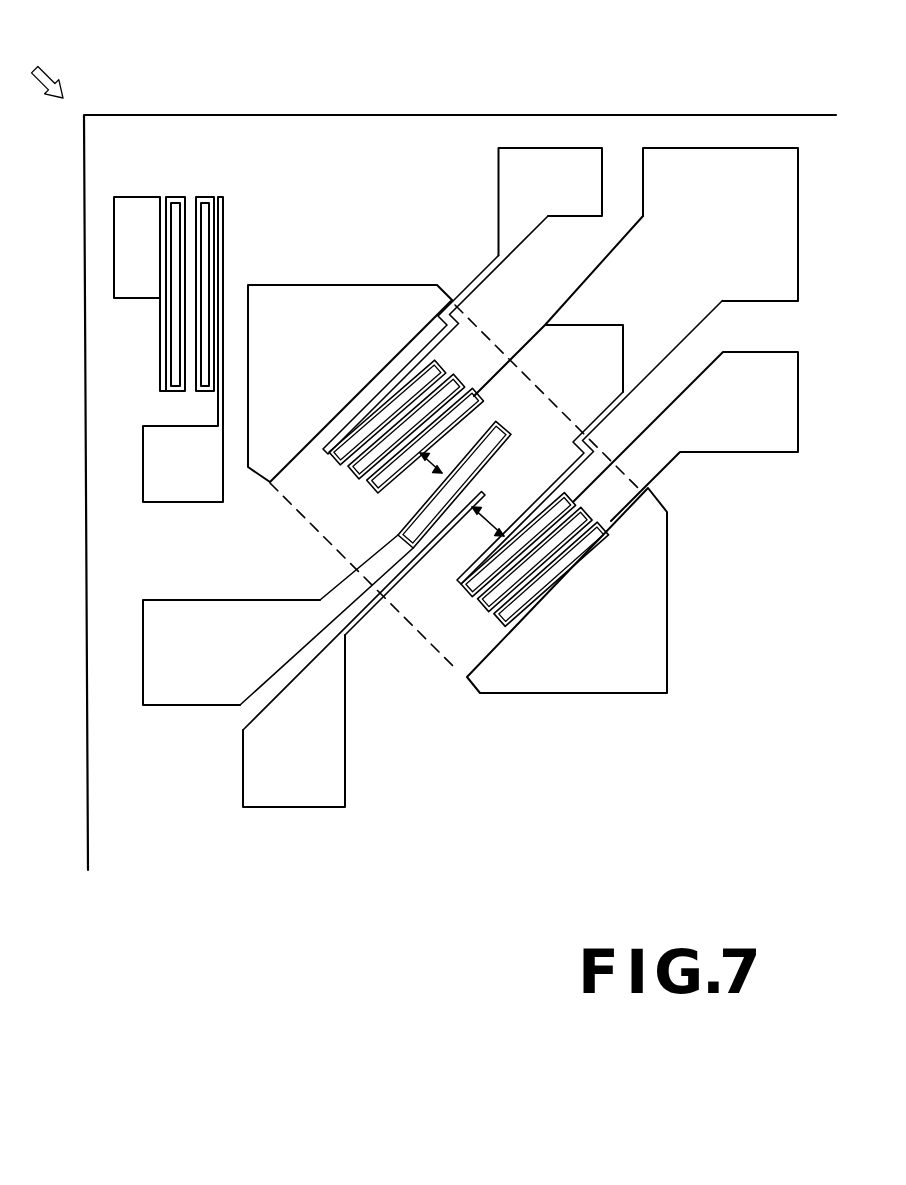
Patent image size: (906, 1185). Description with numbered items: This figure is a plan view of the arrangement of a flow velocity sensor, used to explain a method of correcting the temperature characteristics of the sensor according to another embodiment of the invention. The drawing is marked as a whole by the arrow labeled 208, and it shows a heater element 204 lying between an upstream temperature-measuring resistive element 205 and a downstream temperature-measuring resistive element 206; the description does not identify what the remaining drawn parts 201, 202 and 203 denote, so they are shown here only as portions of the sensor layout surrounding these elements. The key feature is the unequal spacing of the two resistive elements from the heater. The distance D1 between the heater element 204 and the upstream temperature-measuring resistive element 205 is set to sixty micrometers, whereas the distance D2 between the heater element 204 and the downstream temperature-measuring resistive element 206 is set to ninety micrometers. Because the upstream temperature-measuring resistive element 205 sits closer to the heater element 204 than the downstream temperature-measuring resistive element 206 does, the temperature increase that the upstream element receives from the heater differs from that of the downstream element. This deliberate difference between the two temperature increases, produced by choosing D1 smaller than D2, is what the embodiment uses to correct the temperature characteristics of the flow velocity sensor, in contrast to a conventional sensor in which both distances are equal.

The substrate 201 is at (408, 112).
The electrode pad 202 is at (617, 692).
The connection strip 203 is at (423, 590).
The heater element 204 is at (396, 540).
The upstream temperature-measuring resistive element 205 is at (438, 362).
The downstream temperature-measuring resistive element 206 is at (591, 513).
The piezoelectric device 208 is at (56, 79).
The distance D1 is at (433, 462).
The distance D2 is at (487, 517).